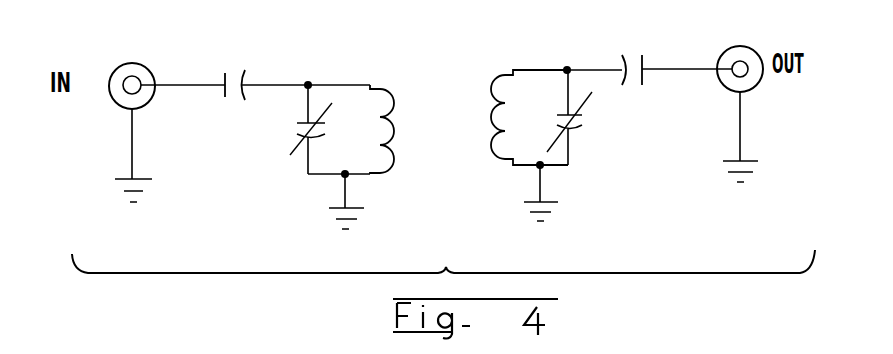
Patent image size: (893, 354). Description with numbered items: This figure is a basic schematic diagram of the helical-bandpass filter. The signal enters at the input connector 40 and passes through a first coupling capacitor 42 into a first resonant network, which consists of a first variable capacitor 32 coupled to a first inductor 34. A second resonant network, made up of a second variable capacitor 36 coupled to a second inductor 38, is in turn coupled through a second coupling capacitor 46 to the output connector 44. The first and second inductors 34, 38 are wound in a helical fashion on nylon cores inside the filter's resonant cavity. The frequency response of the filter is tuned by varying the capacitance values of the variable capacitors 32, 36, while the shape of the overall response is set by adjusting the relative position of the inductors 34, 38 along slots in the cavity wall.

The first variable capacitor 32 is at (310, 129).
The first inductor 34 is at (368, 102).
The second variable capacitor 36 is at (583, 117).
The second inductor 38 is at (529, 96).
The input connector 40 is at (116, 116).
The first coupling capacitor 42 is at (292, 65).
The output connector 44 is at (754, 102).
The second coupling capacitor 46 is at (672, 55).